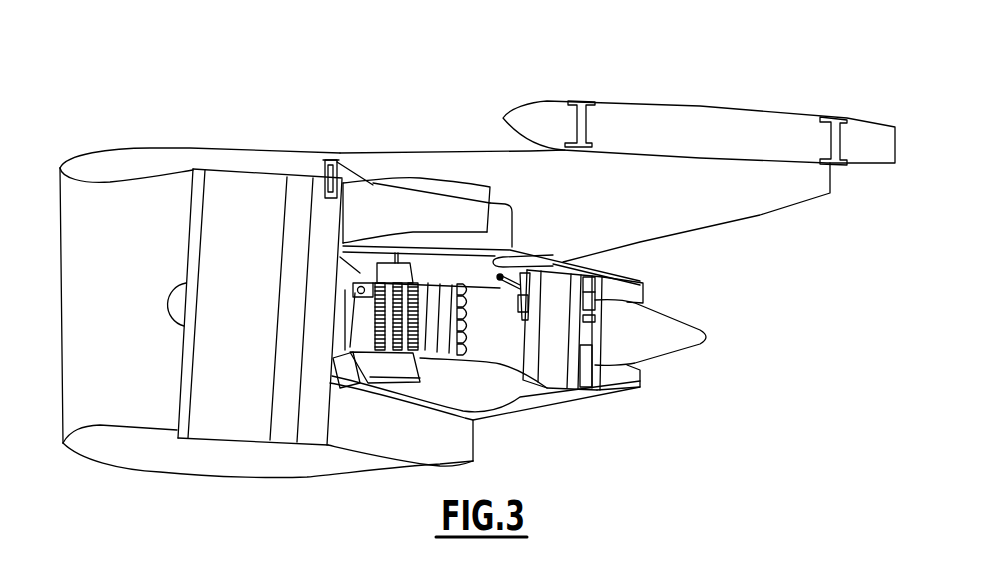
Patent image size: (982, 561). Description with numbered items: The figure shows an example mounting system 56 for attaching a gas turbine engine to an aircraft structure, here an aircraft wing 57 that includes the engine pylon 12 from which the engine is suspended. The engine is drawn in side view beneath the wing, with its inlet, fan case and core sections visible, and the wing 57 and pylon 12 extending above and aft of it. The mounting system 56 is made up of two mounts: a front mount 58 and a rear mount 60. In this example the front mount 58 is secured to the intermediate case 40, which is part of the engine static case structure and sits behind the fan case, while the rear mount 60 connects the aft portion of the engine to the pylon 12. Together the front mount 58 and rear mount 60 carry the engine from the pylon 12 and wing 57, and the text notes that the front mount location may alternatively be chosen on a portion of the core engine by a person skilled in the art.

The engine pylon 12 is at (468, 167).
The intermediate case 40 is at (315, 445).
The mounting system 56 is at (598, 52).
The aircraft wing 57 is at (693, 117).
The front mount 58 is at (332, 162).
The rear mount 60 is at (531, 251).